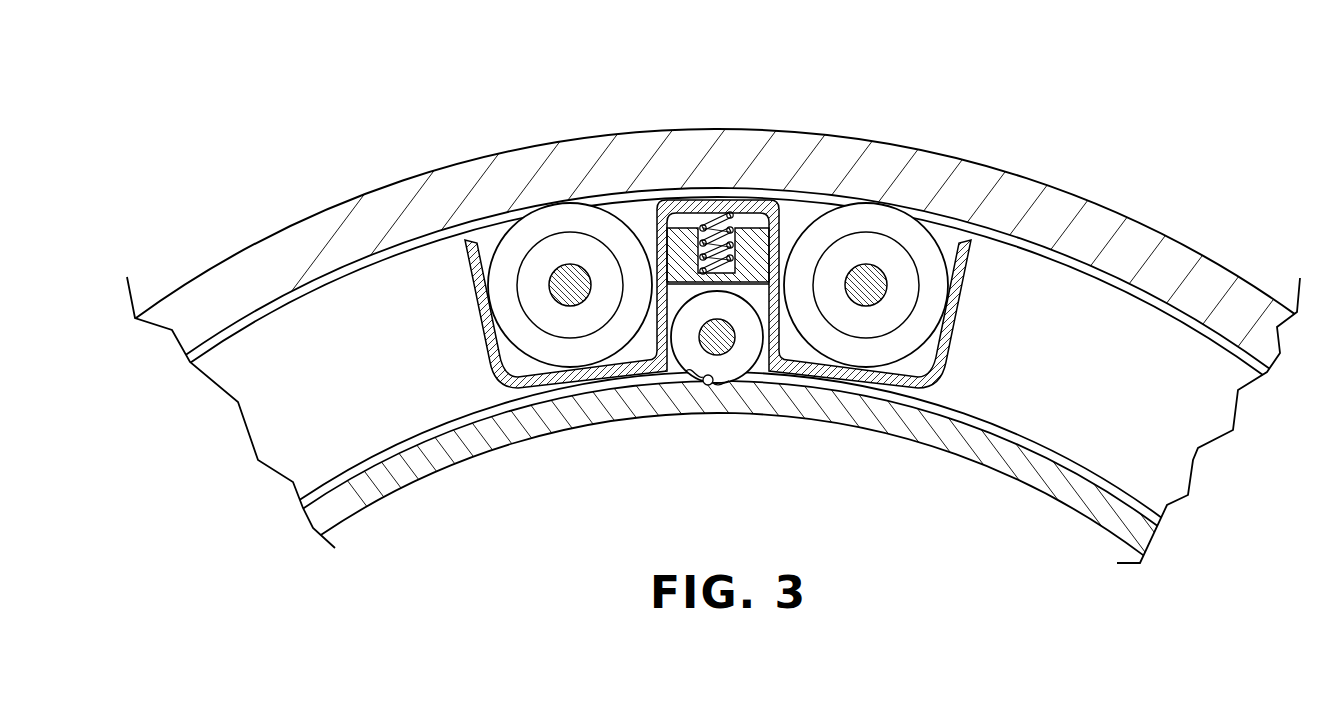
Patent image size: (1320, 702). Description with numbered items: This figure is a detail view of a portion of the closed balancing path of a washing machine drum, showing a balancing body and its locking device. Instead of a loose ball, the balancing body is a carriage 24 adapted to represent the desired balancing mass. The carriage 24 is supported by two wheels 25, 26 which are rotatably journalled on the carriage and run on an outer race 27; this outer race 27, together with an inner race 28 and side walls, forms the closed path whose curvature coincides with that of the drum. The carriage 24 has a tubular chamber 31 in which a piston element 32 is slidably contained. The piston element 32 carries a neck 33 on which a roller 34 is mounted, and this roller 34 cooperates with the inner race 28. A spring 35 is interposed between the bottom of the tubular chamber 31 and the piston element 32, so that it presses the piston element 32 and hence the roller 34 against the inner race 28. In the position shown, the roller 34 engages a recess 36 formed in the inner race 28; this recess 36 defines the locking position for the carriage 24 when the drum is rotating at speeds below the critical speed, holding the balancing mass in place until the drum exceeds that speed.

The carriage 24 is at (963, 283).
The wheel 25 is at (522, 330).
The wheel 26 is at (922, 322).
The outer race 27 is at (415, 245).
The inner race 28 is at (449, 425).
The tubular chamber 31 is at (753, 300).
The piston element 32 is at (683, 233).
The neck 33 is at (723, 347).
The roller 34 is at (685, 352).
The spring 35 is at (724, 222).
The recess 36 is at (707, 386).